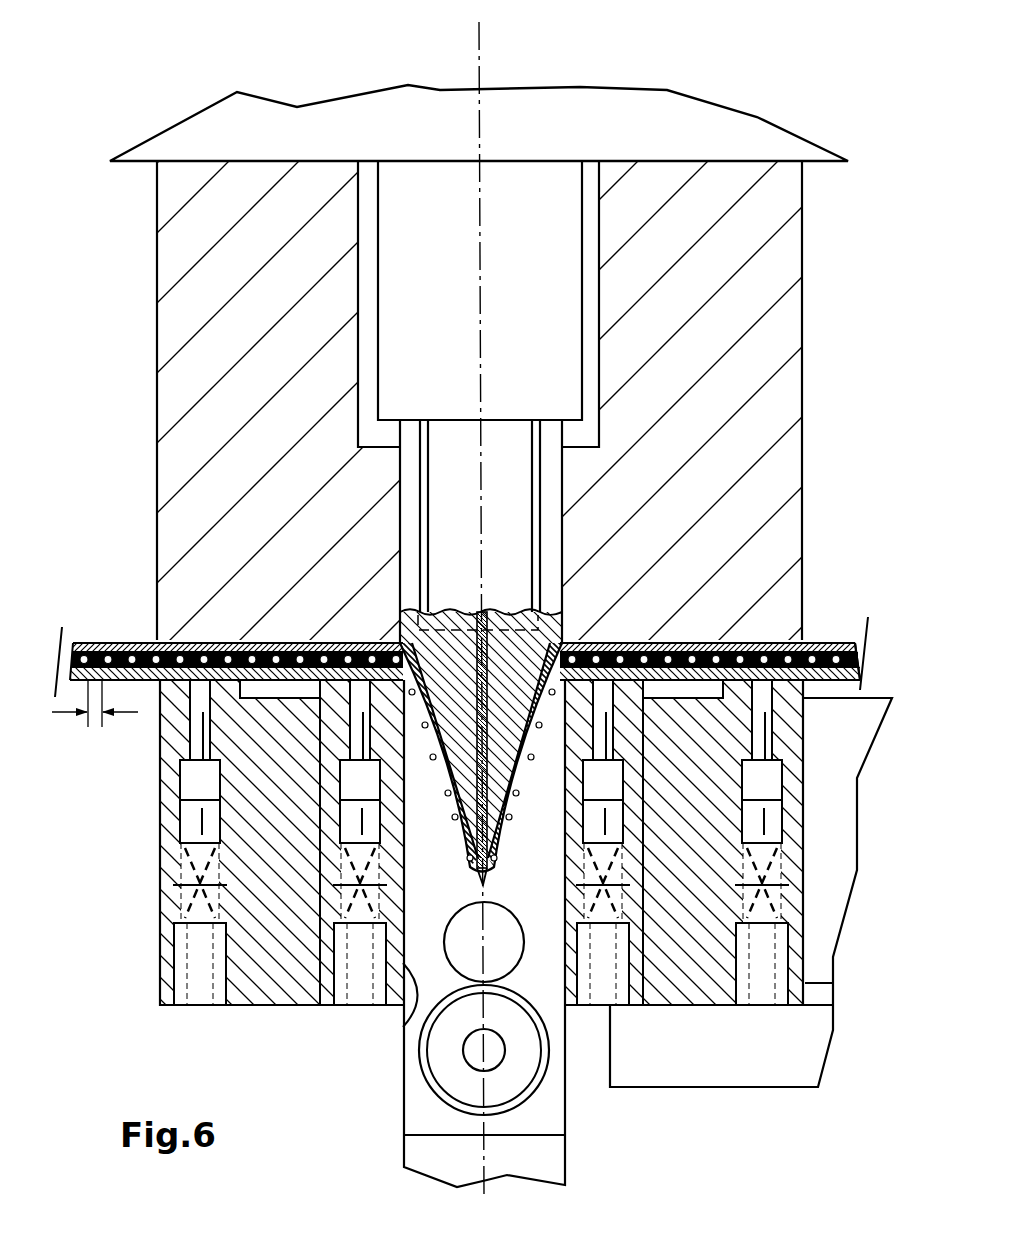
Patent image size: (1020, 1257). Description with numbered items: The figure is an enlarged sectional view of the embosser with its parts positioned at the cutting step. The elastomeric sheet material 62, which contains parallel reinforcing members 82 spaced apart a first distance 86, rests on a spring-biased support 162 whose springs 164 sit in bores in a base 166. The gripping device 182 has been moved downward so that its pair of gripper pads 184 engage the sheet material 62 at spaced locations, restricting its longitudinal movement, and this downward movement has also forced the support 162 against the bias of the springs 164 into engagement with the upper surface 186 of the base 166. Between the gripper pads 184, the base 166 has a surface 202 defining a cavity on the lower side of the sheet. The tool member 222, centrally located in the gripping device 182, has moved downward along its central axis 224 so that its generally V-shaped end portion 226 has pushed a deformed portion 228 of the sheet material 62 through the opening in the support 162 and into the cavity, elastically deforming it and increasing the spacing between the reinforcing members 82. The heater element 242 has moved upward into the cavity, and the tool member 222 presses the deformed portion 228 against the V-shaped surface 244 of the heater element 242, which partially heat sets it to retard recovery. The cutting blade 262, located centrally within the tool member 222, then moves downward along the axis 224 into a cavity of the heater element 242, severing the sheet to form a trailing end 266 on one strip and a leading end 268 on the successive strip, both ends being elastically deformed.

The central axis 224 is at (480, 58).
The V-shaped end portion 226 is at (457, 655).
The cutting blade 262 is at (491, 680).
The tool member 222 is at (398, 573).
The gripping device 182 is at (812, 492).
The gripper pads 184 is at (227, 643).
The elastomeric sheet material 62 is at (90, 645).
The reinforcing members 82 is at (157, 652).
The upper surface 186 is at (807, 643).
The first distance 86 is at (93, 722).
The support 162 is at (157, 682).
The leading end 268 is at (455, 755).
The springs 164 is at (360, 892).
The base 166 is at (283, 972).
The surface 202 is at (403, 1027).
The V-shaped surface 244 is at (453, 822).
The heater element 242 is at (537, 865).
The deformed portion 228 is at (527, 800).
The trailing end 266 is at (540, 750).